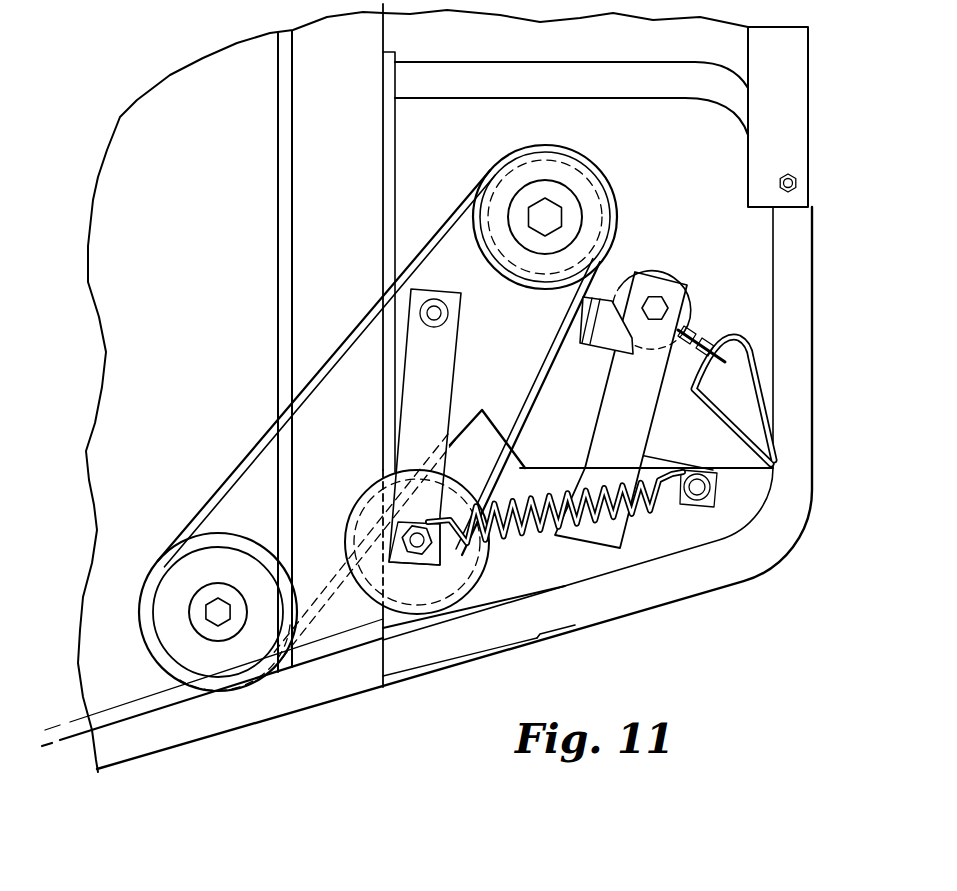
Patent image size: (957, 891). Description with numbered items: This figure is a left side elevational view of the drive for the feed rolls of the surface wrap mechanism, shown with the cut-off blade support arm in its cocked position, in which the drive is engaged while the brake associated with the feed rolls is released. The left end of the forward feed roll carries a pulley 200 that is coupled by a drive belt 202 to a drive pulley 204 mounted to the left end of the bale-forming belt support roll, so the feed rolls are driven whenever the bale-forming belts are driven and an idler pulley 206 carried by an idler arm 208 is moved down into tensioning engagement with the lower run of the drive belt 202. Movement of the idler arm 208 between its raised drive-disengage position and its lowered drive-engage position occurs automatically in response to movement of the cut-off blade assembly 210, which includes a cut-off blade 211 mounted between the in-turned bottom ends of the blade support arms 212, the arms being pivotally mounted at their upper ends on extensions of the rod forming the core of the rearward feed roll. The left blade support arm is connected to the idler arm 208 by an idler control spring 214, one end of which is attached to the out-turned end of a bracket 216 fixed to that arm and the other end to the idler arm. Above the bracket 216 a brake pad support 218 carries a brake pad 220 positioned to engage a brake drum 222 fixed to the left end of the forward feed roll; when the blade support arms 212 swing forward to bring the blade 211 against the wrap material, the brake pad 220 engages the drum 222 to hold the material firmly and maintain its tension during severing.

The pulley 200 is at (547, 291).
The drive belt 202 is at (357, 343).
The drive pulley 204 is at (150, 588).
The idler pulley 206 is at (345, 522).
The idler arm 208 is at (410, 402).
The cut-off blade assembly 210 is at (678, 371).
The cut-off blade 211 is at (600, 548).
The blade support arm 212 is at (627, 423).
The idler control spring 214 is at (512, 545).
The bracket 216 is at (673, 462).
The brake pad support 218 is at (612, 297).
The brake pad 220 is at (582, 340).
The brake drum 222 is at (598, 167).